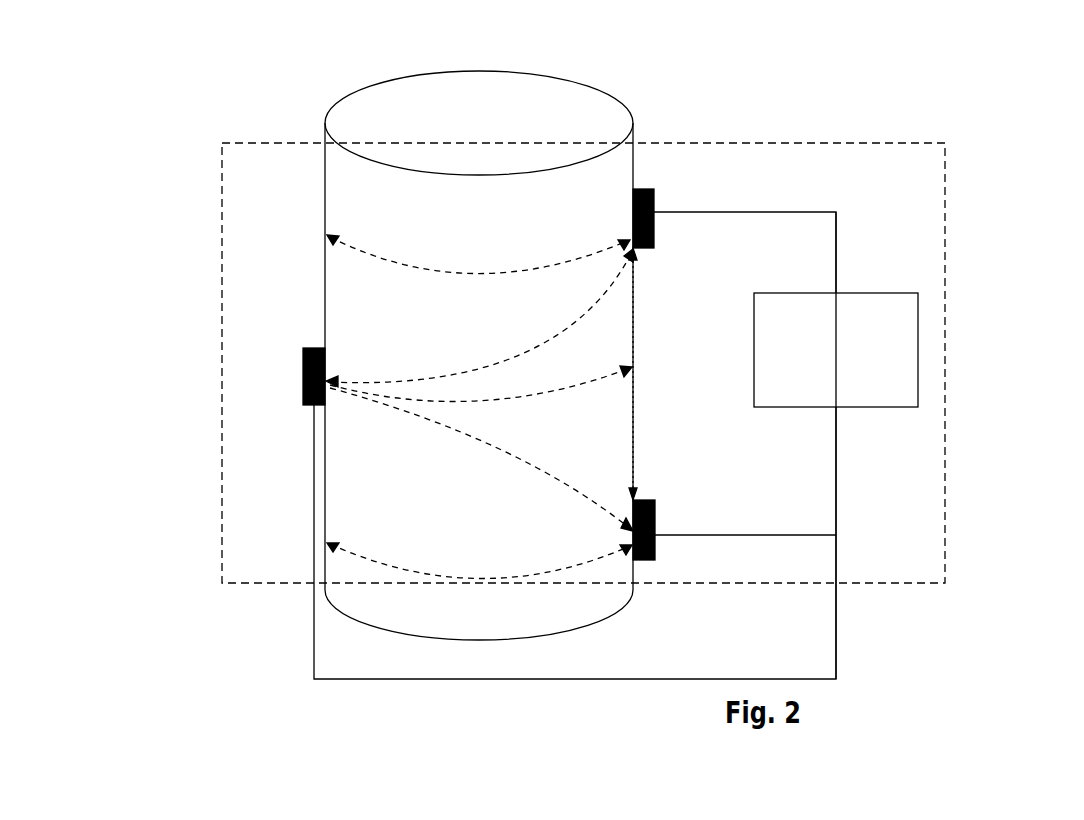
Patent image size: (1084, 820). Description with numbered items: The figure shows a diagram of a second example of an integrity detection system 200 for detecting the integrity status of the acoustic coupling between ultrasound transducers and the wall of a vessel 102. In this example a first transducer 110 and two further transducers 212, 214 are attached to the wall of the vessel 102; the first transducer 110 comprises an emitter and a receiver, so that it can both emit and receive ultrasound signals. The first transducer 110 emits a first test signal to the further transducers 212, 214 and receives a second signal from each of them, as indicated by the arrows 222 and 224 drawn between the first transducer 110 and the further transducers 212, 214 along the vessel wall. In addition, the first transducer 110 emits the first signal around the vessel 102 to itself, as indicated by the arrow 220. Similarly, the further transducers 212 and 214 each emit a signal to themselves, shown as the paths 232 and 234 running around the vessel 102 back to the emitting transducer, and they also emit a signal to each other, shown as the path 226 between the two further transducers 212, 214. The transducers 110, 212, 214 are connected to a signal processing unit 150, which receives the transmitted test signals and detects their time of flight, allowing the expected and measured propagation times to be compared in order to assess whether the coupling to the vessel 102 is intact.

The vessel 102 is at (425, 72).
The ultrasound transducer 110 is at (303, 390).
The signal processing unit 150 is at (852, 293).
The integrity detection system 200 is at (775, 143).
The further transducer 212 is at (654, 207).
The further transducer 214 is at (655, 511).
The arrow 220 is at (624, 377).
The arrow 222 is at (515, 357).
The arrow 224 is at (542, 455).
The signal 226 is at (636, 423).
The signal 232 is at (480, 273).
The signal 234 is at (440, 576).